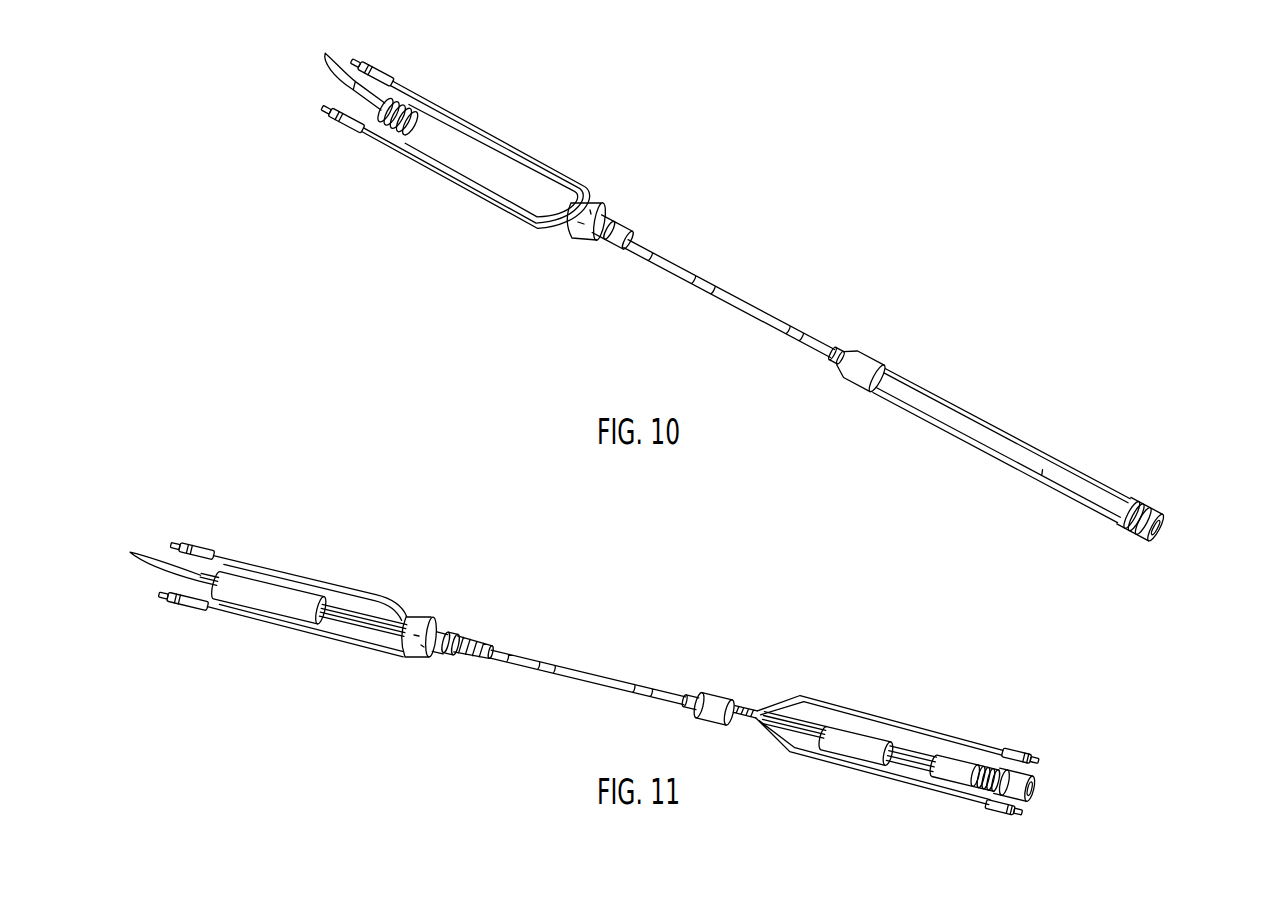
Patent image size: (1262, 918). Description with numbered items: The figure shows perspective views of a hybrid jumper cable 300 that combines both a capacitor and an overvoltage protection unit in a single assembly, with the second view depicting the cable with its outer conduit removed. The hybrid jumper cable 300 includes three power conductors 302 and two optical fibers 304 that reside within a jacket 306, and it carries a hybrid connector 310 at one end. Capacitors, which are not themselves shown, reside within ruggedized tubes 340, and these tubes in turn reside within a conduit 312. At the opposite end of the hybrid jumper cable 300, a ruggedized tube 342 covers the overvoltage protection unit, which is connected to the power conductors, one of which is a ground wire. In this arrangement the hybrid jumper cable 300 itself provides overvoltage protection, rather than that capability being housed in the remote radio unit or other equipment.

In FIG. 10, the hybrid jumper cable 300 is at (983, 328).
In FIG. 10, the power conductors 302 is at (328, 53).
In FIG. 11, the power conductors 302 is at (131, 552).
In FIG. 10, the optical fibers 304 is at (410, 150).
In FIG. 11, the optical fibers 304 is at (334, 628).
In FIG. 10, the jacket 306 is at (734, 296).
In FIG. 10, the hybrid connector 310 is at (1167, 533).
In FIG. 10, the conduit 312 is at (1043, 473).
In FIG. 11, the ruggedized tubes 340 is at (951, 760).
In FIG. 11, the ruggedized tube 342 is at (283, 603).